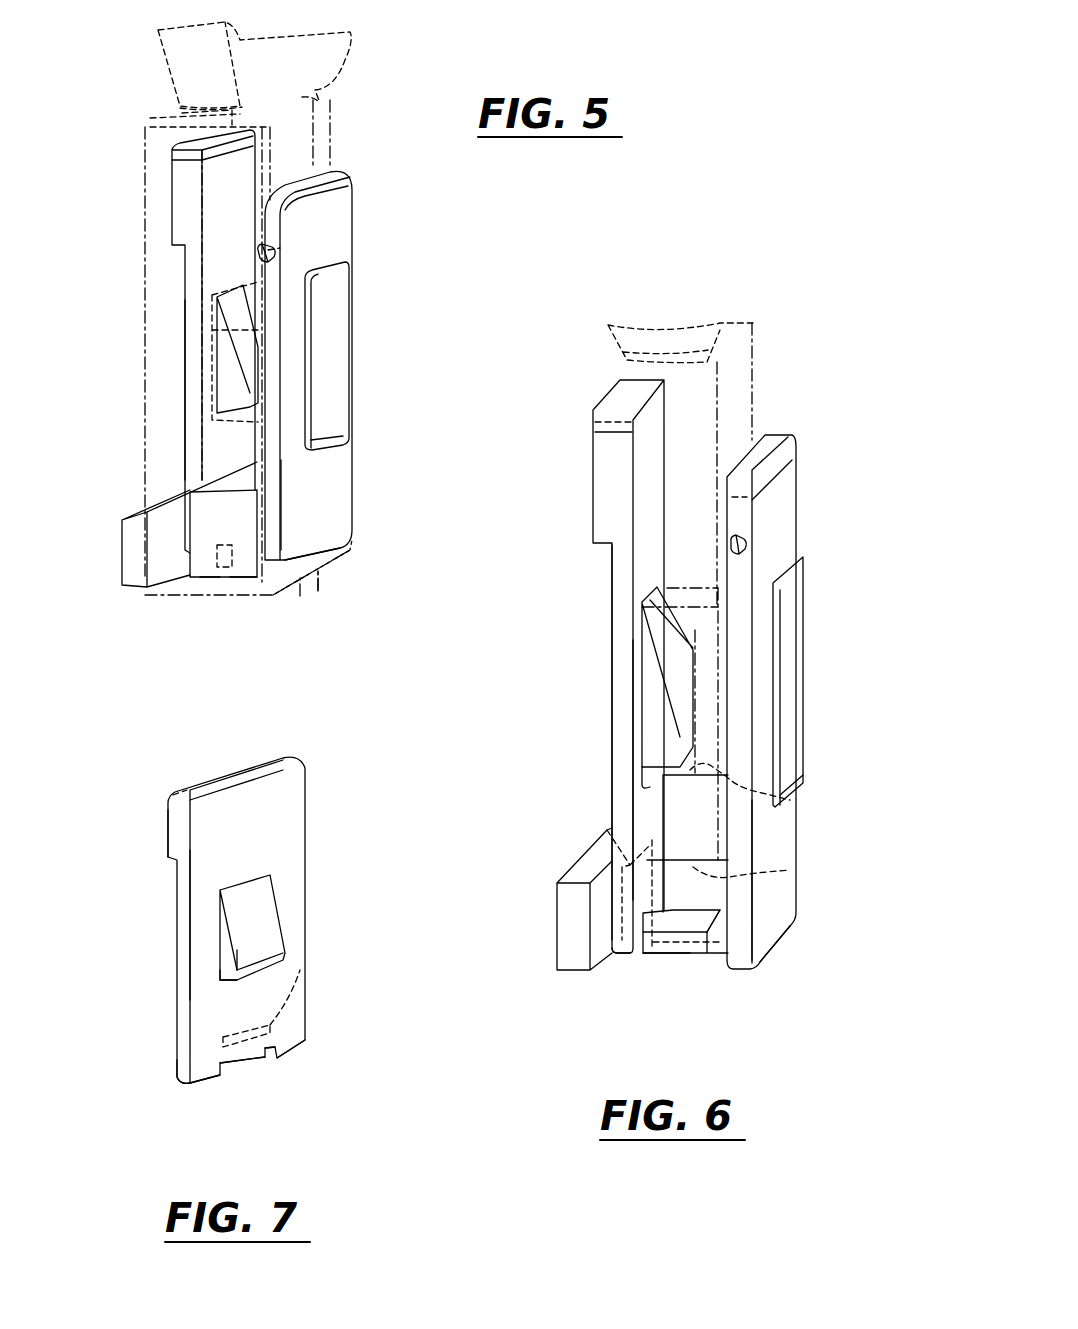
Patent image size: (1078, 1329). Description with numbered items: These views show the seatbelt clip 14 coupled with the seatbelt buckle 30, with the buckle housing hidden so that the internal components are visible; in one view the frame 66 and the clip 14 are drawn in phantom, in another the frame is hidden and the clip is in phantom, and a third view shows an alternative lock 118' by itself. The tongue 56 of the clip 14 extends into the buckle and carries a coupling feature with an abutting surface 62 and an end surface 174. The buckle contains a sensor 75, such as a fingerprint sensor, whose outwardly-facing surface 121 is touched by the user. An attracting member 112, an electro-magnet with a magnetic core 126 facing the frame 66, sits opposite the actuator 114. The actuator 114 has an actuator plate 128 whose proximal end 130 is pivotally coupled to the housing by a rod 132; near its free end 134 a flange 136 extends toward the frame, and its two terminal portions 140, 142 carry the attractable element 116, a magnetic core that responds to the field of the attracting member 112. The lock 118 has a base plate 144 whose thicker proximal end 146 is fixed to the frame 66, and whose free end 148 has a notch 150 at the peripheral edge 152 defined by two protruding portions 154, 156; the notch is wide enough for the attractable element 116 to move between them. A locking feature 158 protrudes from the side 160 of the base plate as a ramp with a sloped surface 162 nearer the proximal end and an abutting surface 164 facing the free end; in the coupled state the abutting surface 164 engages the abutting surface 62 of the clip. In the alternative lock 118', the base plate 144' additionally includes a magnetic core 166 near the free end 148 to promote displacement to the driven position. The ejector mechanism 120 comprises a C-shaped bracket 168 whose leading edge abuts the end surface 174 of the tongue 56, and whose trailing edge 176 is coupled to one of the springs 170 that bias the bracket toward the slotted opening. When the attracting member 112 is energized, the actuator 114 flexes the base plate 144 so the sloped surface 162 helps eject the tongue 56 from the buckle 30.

In FIG. 5, the clip 14 is at (150, 58).
In FIG. 6, the clip 14 is at (785, 332).
In FIG. 5, the buckle 30 is at (140, 124).
In FIG. 5, the tongue 56 is at (296, 152).
In FIG. 6, the tongue 56 is at (740, 394).
In FIG. 6, the abutting surface 62 is at (790, 800).
In FIG. 5, the frame 66 is at (340, 580).
In FIG. 5, the sensor 75 is at (330, 345).
In FIG. 6, the sensor 75 is at (797, 637).
In FIG. 5, the attracting member 112 is at (112, 566).
In FIG. 6, the attracting member 112 is at (547, 917).
In FIG. 5, the actuator 114 is at (362, 240).
In FIG. 6, the actuator 114 is at (810, 513).
In FIG. 6, the attractable element 116 is at (708, 937).
In FIG. 5, the lock 118 is at (158, 341).
In FIG. 6, the lock 118 is at (586, 666).
In FIG. 7, the lock 118' is at (171, 920).
In FIG. 5, the ejector mechanism 120 is at (247, 590).
In FIG. 5, the outwardly-facing surface 121 is at (340, 410).
In FIG. 6, the outwardly-facing surface 121 is at (795, 720).
In FIG. 6, the magnetic core 126 is at (607, 830).
In FIG. 5, the actuator plate 128 is at (316, 490).
In FIG. 6, the actuator plate 128 is at (780, 852).
In FIG. 5, the proximal end 130 is at (332, 200).
In FIG. 6, the proximal end 130 is at (785, 458).
In FIG. 5, the rod 132 is at (270, 254).
In FIG. 6, the rod 132 is at (745, 548).
In FIG. 5, the free end 134 is at (333, 520).
In FIG. 6, the free end 134 is at (778, 924).
In FIG. 6, the flange 136 is at (657, 950).
In FIG. 6, the terminal portion 140 is at (688, 934).
In FIG. 6, the terminal portion 142 is at (707, 913).
In FIG. 6, the base plate 144 is at (578, 760).
In FIG. 7, the base plate 144' is at (119, 831).
In FIG. 5, the proximal end 146 is at (213, 172).
In FIG. 6, the proximal end 146 is at (618, 397).
In FIG. 7, the proximal end 146 is at (290, 783).
In FIG. 6, the free end 148 is at (617, 955).
In FIG. 7, the free end 148 is at (292, 1017).
In FIG. 7, the notch 150 is at (252, 1070).
In FIG. 7, the peripheral edge 152 is at (188, 1062).
In FIG. 7, the protruding portion 154 is at (292, 1043).
In FIG. 7, the protruding portion 156 is at (202, 1075).
In FIG. 5, the locking feature 158 is at (232, 305).
In FIG. 6, the locking feature 158 is at (672, 660).
In FIG. 7, the locking feature 158 is at (294, 912).
In FIG. 5, the side 160 is at (212, 272).
In FIG. 6, the side 160 is at (648, 550).
In FIG. 7, the side 160 is at (290, 837).
In FIG. 7, the sloped surface 162 is at (245, 942).
In FIG. 6, the abutting surface 164 is at (642, 785).
In FIG. 7, the abutting surface 164 is at (223, 983).
In FIG. 7, the magnetic core 166 is at (308, 958).
In FIG. 5, the C-shaped bracket 168 is at (198, 567).
In FIG. 5, the springs 170 is at (224, 568).
In FIG. 6, the end surface 174 is at (790, 870).
In FIG. 5, the trailing edge 176 is at (210, 580).